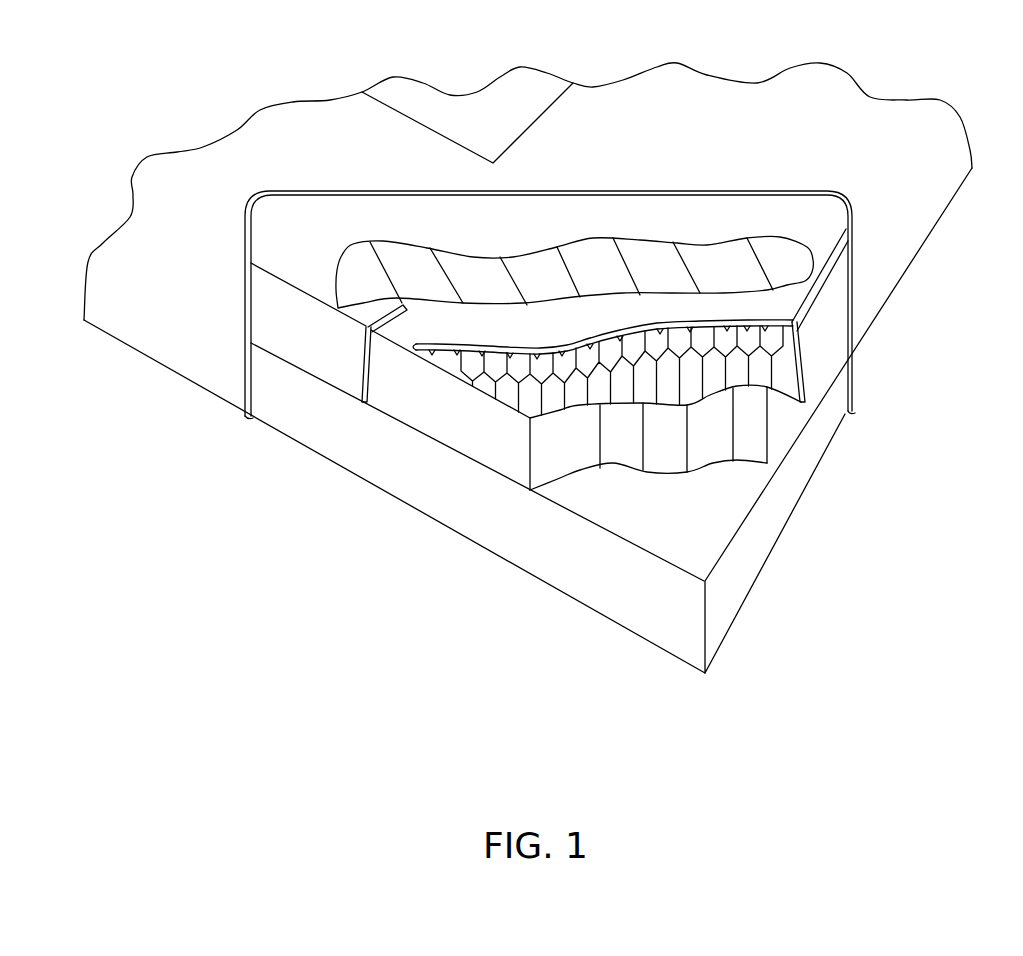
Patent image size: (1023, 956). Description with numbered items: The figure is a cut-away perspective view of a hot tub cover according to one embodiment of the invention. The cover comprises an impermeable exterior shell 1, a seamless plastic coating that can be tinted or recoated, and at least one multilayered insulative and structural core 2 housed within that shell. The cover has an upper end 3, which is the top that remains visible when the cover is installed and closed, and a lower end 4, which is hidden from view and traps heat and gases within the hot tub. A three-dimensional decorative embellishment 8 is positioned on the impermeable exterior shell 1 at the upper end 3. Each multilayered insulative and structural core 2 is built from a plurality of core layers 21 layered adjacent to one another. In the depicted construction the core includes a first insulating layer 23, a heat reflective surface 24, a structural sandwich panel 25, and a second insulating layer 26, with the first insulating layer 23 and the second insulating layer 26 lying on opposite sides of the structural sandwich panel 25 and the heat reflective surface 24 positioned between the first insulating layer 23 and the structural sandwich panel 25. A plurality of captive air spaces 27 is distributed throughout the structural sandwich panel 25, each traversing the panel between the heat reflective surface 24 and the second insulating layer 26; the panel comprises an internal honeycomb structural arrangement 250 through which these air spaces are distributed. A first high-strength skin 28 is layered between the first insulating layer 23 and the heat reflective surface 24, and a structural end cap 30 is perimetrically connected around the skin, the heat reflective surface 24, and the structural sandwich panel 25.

The impermeable exterior shell 1 is at (922, 233).
The multilayered insulative and structural core 2 is at (635, 680).
The upper end 3 is at (688, 84).
The lower end 4 is at (197, 428).
The 3-dimensional decorative embellishment 8 is at (480, 92).
The core layers 21 is at (275, 220).
The first insulating layer 23 is at (532, 234).
The heat reflective surface 24 is at (472, 348).
The structural sandwich panel 25 is at (476, 437).
The second insulating layer 26 is at (451, 502).
The captive air spaces 27 is at (560, 358).
The first high-strength skin 28 is at (442, 347).
The structural end cap 30 is at (355, 343).
The internal honeycomb structural arrangement 250 is at (589, 490).